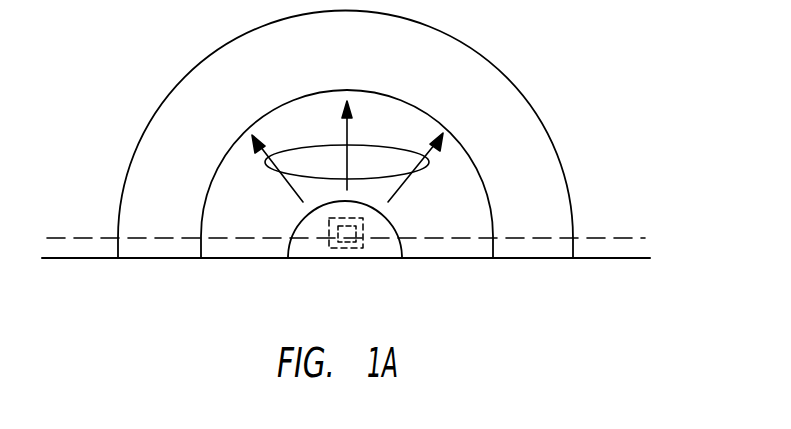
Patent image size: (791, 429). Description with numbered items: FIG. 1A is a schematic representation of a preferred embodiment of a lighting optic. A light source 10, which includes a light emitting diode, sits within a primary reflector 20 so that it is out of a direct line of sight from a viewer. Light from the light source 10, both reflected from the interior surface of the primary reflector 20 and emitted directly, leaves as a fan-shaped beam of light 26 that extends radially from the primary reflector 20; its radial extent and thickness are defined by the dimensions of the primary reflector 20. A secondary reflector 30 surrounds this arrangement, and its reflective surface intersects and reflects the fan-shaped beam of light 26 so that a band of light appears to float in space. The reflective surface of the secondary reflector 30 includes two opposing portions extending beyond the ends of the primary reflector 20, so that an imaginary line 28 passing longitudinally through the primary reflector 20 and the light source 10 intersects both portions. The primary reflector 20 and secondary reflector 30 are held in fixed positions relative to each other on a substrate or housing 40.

The light source 10 is at (343, 239).
The primary reflector 20 is at (398, 231).
The fan-shaped beam of light 26 is at (272, 164).
The imaginary line 28 is at (633, 237).
The secondary reflector 30 is at (543, 113).
The substrate or housing 40 is at (625, 259).